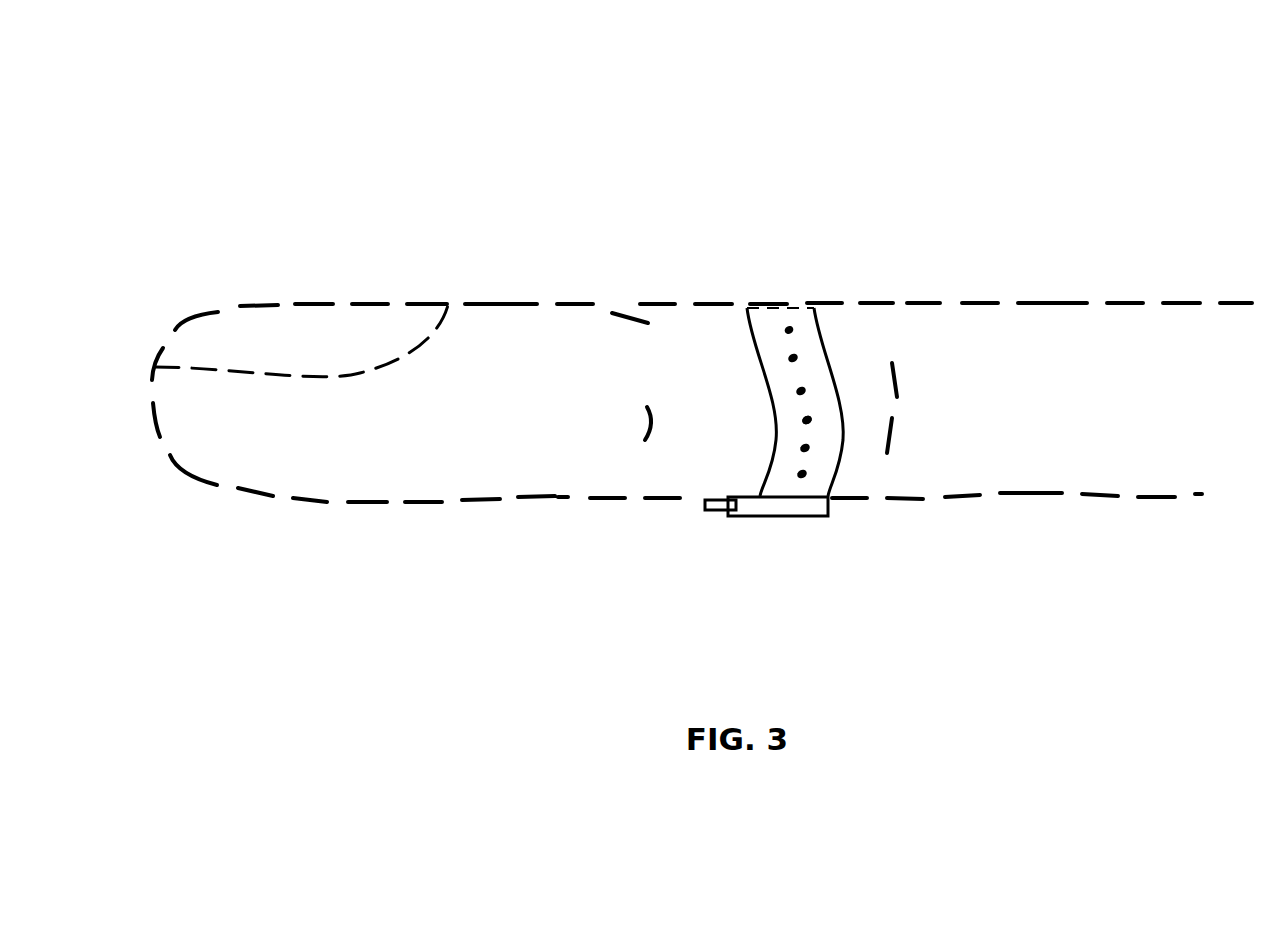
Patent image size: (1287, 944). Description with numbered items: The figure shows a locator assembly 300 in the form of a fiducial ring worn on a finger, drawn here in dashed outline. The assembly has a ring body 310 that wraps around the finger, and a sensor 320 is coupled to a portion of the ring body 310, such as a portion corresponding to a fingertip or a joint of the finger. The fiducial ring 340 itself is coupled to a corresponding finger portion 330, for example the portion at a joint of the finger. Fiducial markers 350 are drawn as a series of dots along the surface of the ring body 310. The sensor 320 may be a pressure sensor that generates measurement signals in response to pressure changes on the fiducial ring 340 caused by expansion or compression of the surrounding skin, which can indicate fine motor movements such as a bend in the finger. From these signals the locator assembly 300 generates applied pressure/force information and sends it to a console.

The locator assembly 300 is at (386, 96).
The ring body 310 is at (795, 317).
The sensor 320 is at (767, 516).
The finger portion 330 is at (848, 473).
The fiducial ring 340 is at (820, 338).
The fiducial marker 350 is at (807, 420).